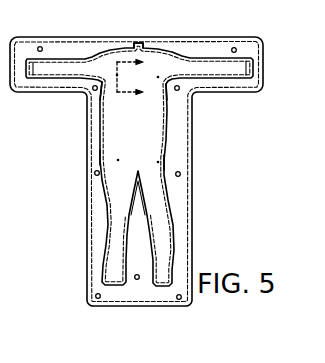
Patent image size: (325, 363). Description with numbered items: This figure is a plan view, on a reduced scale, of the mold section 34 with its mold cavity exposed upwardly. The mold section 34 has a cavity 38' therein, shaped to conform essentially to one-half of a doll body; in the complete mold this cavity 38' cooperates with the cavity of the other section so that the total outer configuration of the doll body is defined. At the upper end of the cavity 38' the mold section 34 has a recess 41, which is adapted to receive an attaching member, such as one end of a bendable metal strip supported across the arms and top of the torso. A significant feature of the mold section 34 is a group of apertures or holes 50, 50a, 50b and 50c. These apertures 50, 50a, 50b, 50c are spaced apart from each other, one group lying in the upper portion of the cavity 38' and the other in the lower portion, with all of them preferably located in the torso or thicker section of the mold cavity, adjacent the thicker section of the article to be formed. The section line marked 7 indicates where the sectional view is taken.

The mold section 34 is at (158, 296).
The cavity 38' is at (139, 164).
The recess 41 is at (134, 43).
The aperture 50 is at (117, 160).
The aperture 50a is at (159, 161).
The aperture 50b is at (161, 75).
The aperture 50c is at (110, 79).
The section line 7- 7 is at (137, 76).